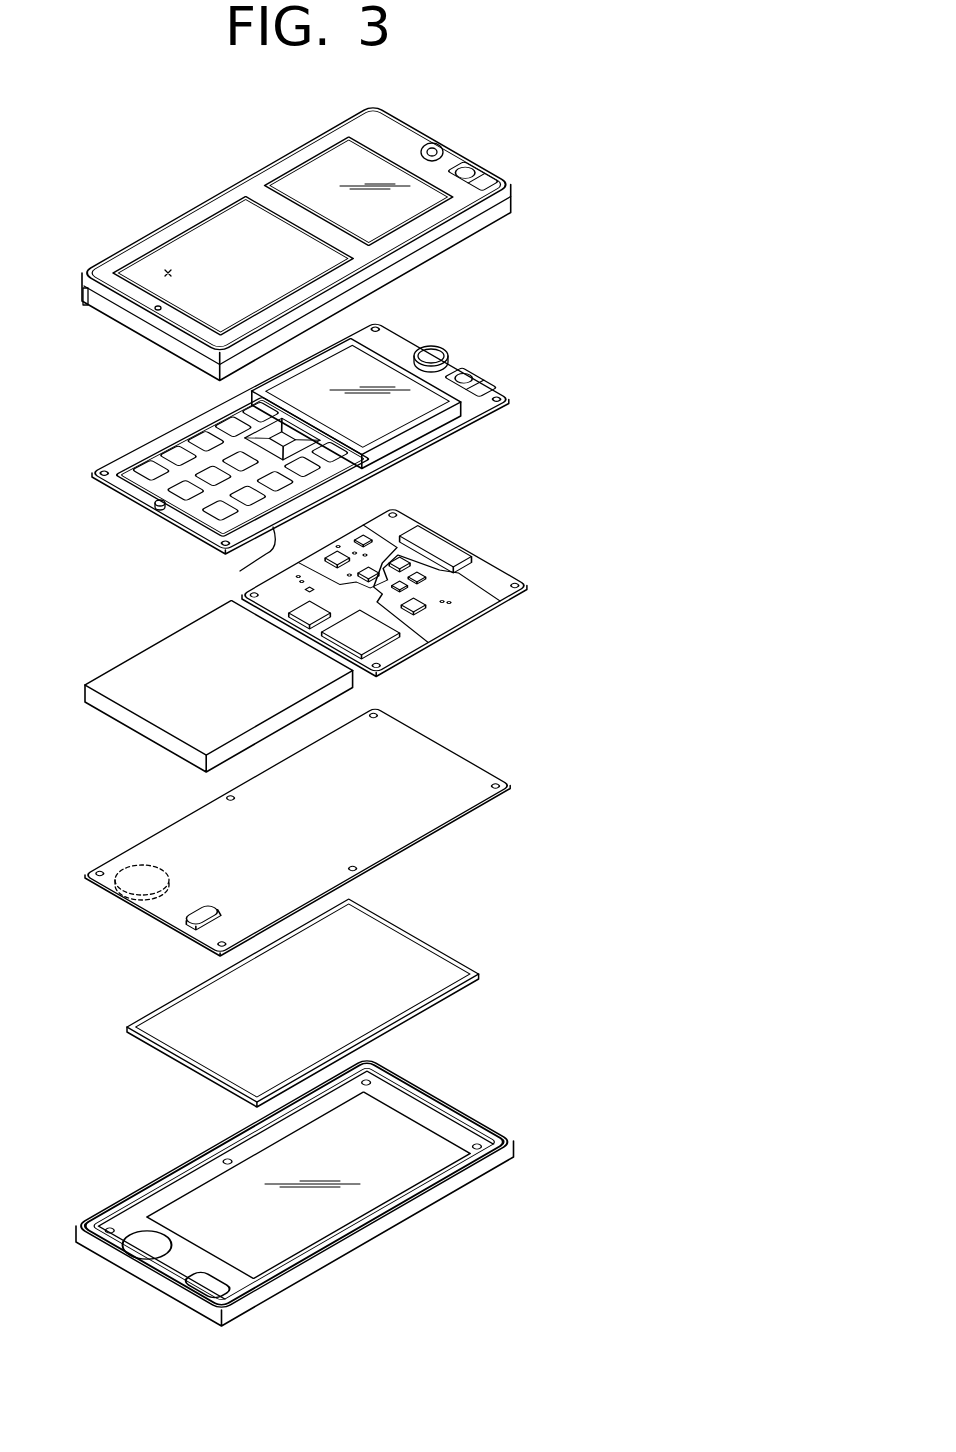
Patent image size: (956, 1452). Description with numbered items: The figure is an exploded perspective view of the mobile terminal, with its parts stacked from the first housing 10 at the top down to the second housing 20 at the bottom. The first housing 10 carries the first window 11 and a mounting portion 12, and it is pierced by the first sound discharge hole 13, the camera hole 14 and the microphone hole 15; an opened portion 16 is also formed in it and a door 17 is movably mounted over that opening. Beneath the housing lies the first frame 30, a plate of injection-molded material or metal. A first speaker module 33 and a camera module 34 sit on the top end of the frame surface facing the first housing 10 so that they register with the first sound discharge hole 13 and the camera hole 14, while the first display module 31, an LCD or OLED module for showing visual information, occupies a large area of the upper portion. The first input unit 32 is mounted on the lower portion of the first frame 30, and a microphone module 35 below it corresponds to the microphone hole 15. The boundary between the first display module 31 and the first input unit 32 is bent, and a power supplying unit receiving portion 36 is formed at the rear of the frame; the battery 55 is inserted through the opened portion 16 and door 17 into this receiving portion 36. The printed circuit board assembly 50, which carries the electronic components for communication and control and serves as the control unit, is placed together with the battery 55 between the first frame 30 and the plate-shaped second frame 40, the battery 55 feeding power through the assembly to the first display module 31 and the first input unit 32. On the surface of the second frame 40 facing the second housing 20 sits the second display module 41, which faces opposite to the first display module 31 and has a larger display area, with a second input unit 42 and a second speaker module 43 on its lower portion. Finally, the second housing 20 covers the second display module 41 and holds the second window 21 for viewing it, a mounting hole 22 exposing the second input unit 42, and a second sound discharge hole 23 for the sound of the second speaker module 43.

The first housing 10 is at (536, 193).
The first window 11 is at (312, 173).
The mounting portion 12 is at (167, 268).
The first sound discharge hole 13 is at (432, 150).
The camera hole 14 is at (465, 172).
The microphone hole 15 is at (155, 308).
The opened portion 16 is at (80, 297).
The door 17 is at (103, 309).
The second housing 20 is at (524, 1137).
The second window 21 is at (383, 1143).
The mounting hole 22 is at (142, 1250).
The second sound discharge hole 23 is at (203, 1282).
The first frame 30 is at (478, 409).
The first display module 31 is at (364, 374).
The first input unit 32 is at (185, 445).
The first speaker module 33 is at (434, 356).
The camera module 34 is at (468, 378).
The microphone module 35 is at (150, 499).
The power supplying unit receiving portion 36 is at (250, 566).
The second frame 40 is at (473, 778).
The second display module 41 is at (212, 1047).
The second input unit 42 is at (130, 905).
The second speaker module 43 is at (190, 930).
The printed circuit board assembly 50 is at (507, 580).
The battery 55 is at (122, 682).